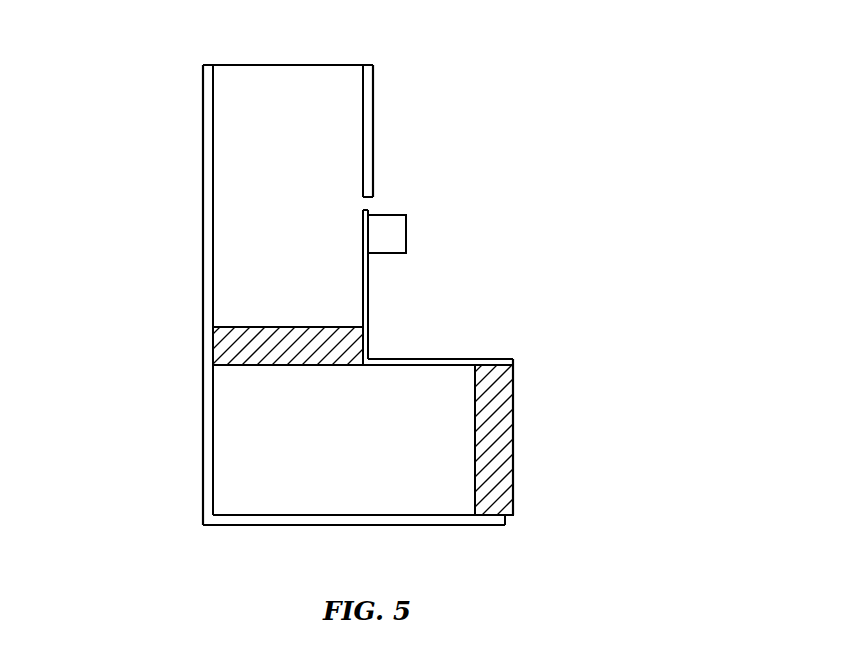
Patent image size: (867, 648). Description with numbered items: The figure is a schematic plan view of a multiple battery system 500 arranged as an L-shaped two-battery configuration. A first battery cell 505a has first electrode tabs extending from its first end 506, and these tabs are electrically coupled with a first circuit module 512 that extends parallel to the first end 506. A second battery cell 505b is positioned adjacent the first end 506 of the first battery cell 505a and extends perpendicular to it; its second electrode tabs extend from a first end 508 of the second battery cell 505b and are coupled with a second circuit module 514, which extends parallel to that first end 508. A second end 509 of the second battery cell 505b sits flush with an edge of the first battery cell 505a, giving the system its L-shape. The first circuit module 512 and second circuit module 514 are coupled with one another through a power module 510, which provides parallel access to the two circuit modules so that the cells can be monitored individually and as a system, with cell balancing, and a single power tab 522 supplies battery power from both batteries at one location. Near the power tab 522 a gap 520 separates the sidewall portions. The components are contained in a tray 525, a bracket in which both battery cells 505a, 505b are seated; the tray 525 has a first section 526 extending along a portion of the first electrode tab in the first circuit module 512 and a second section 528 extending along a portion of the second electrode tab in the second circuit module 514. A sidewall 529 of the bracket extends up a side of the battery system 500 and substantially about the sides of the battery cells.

The multiple battery system 500 is at (95, 68).
The first battery cell 505a is at (345, 65).
The second battery cell 505b is at (440, 360).
The first end of the first battery cell 506 is at (235, 327).
The first end of the second battery cell 508 is at (485, 377).
The second end of the second battery cell 509 is at (210, 460).
The power module 510 is at (368, 305).
The first circuit module 512 is at (366, 350).
The second circuit module 514 is at (514, 450).
The gap 520 is at (368, 202).
The power tab 522 is at (406, 240).
The tray 525 is at (203, 172).
The first section of the tray 526 is at (212, 345).
The second section of the tray 528 is at (498, 527).
The sidewall 529 is at (375, 118).